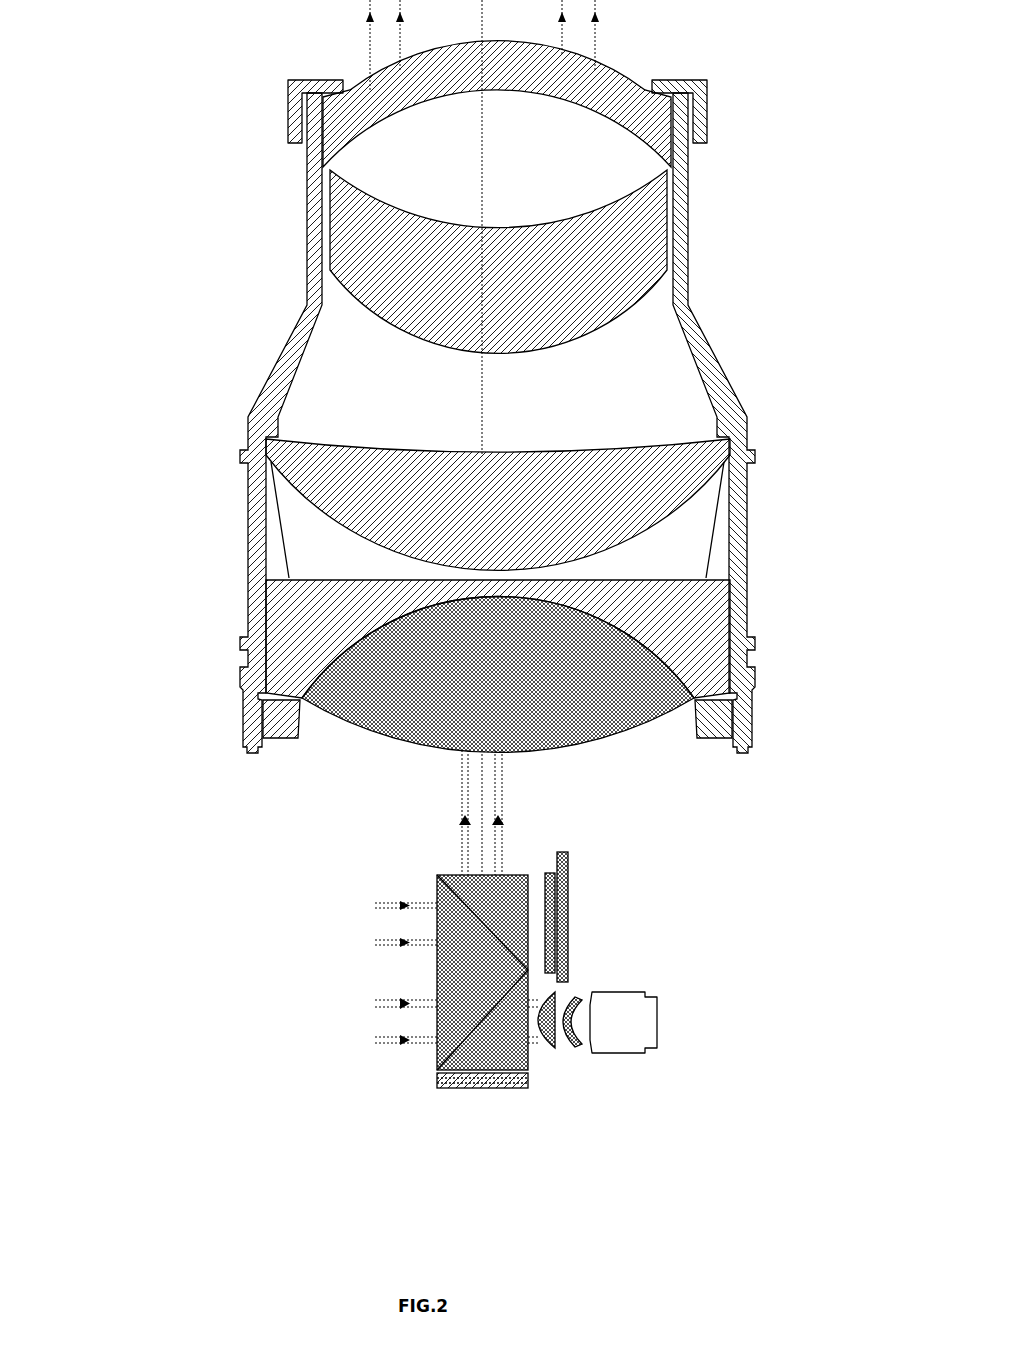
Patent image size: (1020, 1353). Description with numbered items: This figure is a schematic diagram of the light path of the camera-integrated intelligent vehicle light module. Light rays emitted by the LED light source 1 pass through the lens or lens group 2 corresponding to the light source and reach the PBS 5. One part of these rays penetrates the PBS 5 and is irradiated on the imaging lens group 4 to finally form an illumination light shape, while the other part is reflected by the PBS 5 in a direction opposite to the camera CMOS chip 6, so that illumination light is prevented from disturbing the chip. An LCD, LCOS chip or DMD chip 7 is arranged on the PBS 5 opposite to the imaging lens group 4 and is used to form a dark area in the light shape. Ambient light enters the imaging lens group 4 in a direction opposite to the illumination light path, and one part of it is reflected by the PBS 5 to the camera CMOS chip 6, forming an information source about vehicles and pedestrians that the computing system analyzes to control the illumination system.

The LED light source 1 is at (632, 1028).
The lens or lens group corresponding to the light source 2 is at (543, 1043).
The imaging lens group 4 is at (282, 290).
The PBS 5 is at (452, 982).
The camera CMOS chip 6 is at (558, 927).
The LCD, LCOS chip or DMD chip 7 is at (487, 1085).